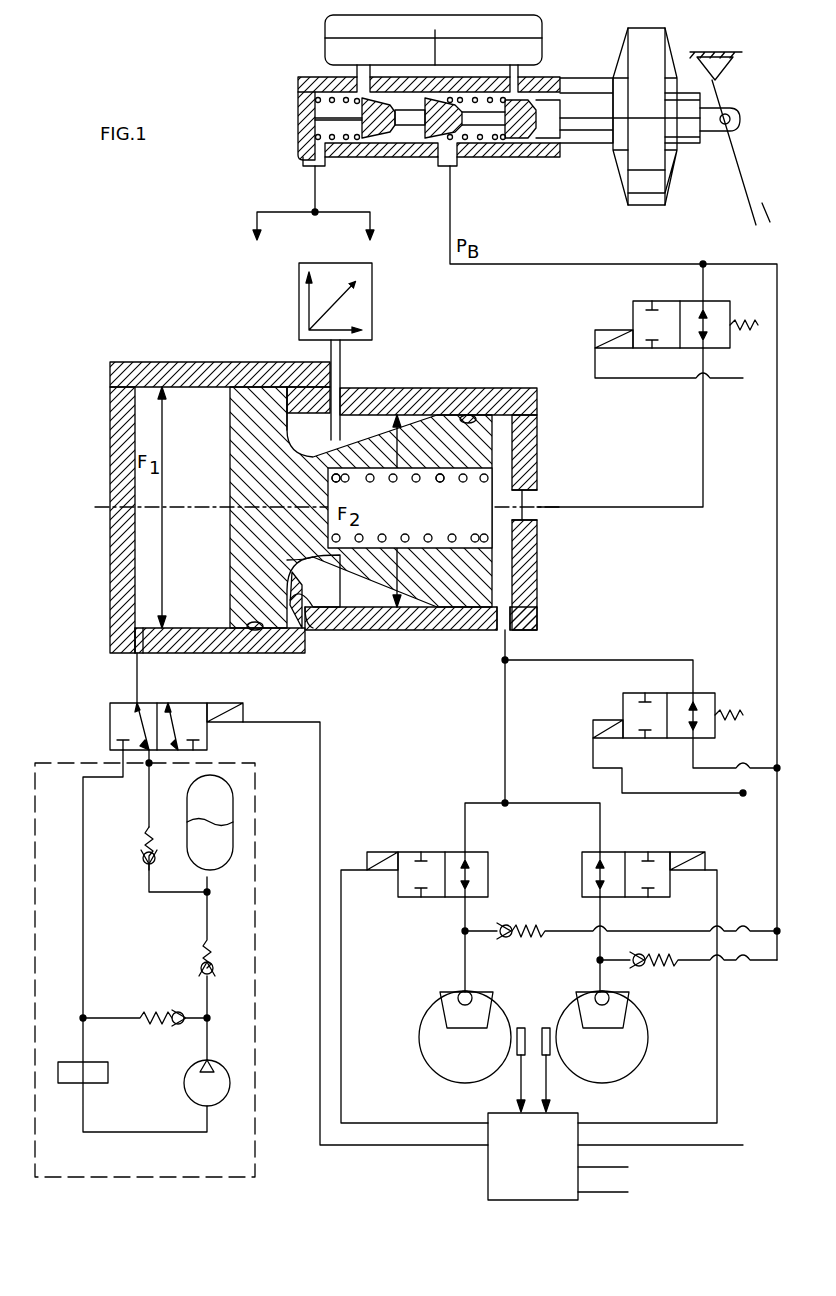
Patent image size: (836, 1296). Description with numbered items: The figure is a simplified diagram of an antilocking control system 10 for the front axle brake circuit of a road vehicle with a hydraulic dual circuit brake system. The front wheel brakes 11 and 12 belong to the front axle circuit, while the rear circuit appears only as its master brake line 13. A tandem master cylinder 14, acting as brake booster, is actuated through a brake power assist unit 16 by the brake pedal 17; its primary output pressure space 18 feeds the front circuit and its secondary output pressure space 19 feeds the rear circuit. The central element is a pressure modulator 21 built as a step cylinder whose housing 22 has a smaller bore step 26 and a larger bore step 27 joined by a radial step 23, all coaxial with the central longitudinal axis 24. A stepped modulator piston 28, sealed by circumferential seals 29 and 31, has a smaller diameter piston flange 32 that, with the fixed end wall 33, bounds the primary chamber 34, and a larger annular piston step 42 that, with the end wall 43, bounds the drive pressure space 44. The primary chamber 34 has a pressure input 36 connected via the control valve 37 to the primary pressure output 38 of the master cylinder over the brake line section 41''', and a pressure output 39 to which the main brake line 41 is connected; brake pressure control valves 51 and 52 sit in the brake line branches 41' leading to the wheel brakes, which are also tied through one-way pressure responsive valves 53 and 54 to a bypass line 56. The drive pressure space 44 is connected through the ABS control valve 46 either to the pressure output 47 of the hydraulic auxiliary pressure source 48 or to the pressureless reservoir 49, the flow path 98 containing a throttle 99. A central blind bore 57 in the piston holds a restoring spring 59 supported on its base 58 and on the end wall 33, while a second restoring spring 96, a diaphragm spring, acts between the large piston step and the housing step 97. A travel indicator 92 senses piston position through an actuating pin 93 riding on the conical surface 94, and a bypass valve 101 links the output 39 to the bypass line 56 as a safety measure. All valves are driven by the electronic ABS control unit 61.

The antilocking control system 10 is at (250, 82).
The front wheel brake 11 is at (440, 1065).
The front wheel brake 12 is at (630, 1065).
The master brake line 13 is at (312, 185).
The tandem master cylinder 14 is at (515, 158).
The brake power assist unit 16 is at (628, 60).
The brake pedal 17 is at (738, 175).
The primary output pressure space 18 is at (492, 128).
The secondary output pressure space 19 is at (322, 118).
The pressure modulator 21 is at (218, 375).
The modulator housing 22 is at (448, 392).
The radial step 23 is at (290, 372).
The central longitudinal axis 24 is at (102, 520).
The smaller bore step 26 is at (402, 410).
The larger bore step 27 is at (190, 388).
The modulator piston 28 is at (228, 530).
The circumferential seal 29 is at (470, 410).
The circumferential seal 31 is at (256, 632).
The smaller diameter piston flange 32 is at (500, 432).
The fixed end wall 33 is at (535, 550).
The primary chamber 34 is at (520, 595).
The pressure input 36 is at (540, 495).
The control valve 37 is at (670, 292).
The primary pressure output 38 is at (448, 192).
The pressure output 39 is at (503, 635).
The main brake line 41 is at (530, 731).
The brake line branch 41' is at (533, 826).
The brake line section 41''' is at (506, 264).
The larger annular flange-shaped piston step 42 is at (240, 478).
The end wall 43 is at (112, 438).
The drive pressure space 44 is at (130, 590).
The ABS control valve 46 is at (125, 715).
The pressure output 47 is at (149, 766).
The hydraulic auxiliary pressure source 48 is at (58, 768).
The reservoir 49 is at (75, 1072).
The brake pressure control valve 51 is at (402, 890).
The brake pressure control valve 52 is at (667, 895).
The one-way pressure responsive valve 53 is at (528, 925).
The one-way pressure responsive valve 54 is at (670, 966).
The bypass line 56 is at (776, 590).
The central blind bore 57 is at (410, 508).
The base of the blind bore 58 is at (312, 498).
The restoring spring 59 is at (434, 480).
The electronic ABS control unit 61 is at (498, 1160).
The travel or position indicator 92 is at (340, 275).
The actuating pin 93 is at (330, 354).
The conical surface 94 is at (393, 420).
The second restoring spring 96 is at (290, 580).
The housing step 97 is at (320, 632).
The flow path 98 is at (148, 715).
The throttle 99 is at (140, 725).
The bypass valve 101 is at (706, 700).